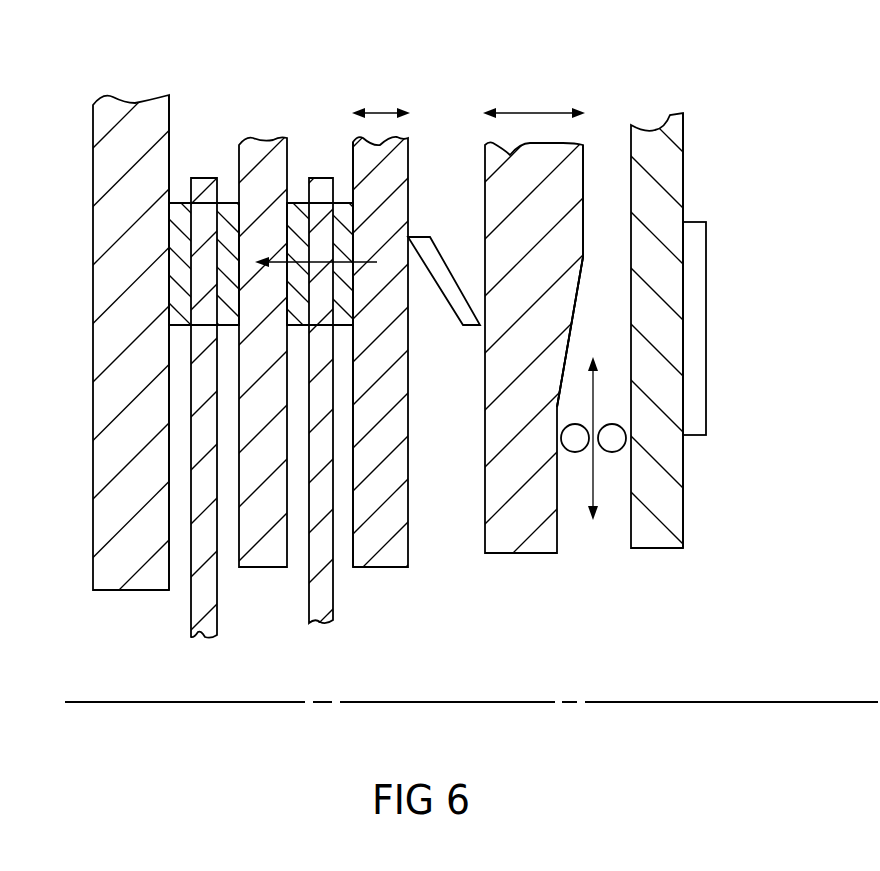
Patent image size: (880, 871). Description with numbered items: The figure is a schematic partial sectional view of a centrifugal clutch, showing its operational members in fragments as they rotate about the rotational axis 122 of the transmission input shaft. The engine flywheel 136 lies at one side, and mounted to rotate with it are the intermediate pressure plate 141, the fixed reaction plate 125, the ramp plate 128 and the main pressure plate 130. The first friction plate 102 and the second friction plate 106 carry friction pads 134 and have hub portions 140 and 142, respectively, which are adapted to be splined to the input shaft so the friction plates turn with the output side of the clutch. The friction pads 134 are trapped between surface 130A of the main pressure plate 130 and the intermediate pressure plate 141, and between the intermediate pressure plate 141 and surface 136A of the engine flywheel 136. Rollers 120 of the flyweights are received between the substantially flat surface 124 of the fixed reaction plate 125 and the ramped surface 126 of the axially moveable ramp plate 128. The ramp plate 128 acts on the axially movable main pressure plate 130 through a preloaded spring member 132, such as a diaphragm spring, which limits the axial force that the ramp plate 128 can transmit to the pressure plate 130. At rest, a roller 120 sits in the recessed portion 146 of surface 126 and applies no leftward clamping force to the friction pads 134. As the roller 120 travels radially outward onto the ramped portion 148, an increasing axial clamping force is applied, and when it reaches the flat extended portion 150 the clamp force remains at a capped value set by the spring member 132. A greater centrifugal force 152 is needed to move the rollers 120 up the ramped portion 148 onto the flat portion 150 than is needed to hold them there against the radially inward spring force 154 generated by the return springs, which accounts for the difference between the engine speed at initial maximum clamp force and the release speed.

The first friction plate 102 is at (440, 435).
The second friction plate 106 is at (410, 435).
The rollers 120 is at (618, 450).
The rotational axis 122 is at (255, 702).
The substantially flat surface 124 is at (631, 140).
The fixed reaction plate 125 is at (668, 168).
The ramped surface 126 is at (557, 553).
The ramp plate 128 is at (488, 553).
The main pressure plate 130 is at (382, 567).
The surface of main pressure plate 130A is at (354, 383).
The preloaded spring member 132 is at (445, 282).
The friction pads 134 is at (228, 207).
The engine flywheel 136 is at (103, 243).
The surface of engine flywheel 136A is at (170, 117).
The hub portion 140 is at (333, 612).
The intermediate pressure plate 141 is at (258, 567).
The hub portion 142 is at (192, 608).
The recessed portion 146 is at (557, 407).
The ramped portion 148 is at (572, 320).
The flat extended portion 150 is at (583, 212).
The centrifugal force 152 is at (593, 406).
The spring force 154 is at (593, 483).